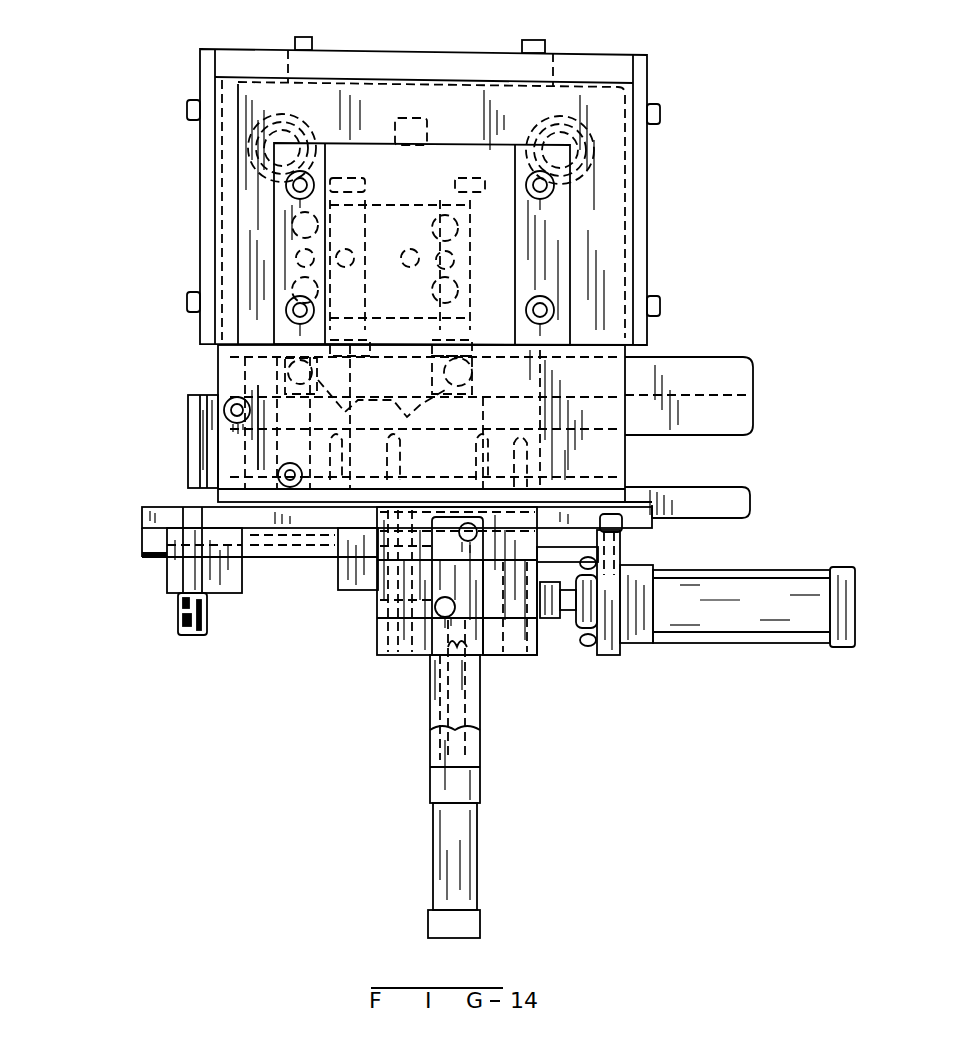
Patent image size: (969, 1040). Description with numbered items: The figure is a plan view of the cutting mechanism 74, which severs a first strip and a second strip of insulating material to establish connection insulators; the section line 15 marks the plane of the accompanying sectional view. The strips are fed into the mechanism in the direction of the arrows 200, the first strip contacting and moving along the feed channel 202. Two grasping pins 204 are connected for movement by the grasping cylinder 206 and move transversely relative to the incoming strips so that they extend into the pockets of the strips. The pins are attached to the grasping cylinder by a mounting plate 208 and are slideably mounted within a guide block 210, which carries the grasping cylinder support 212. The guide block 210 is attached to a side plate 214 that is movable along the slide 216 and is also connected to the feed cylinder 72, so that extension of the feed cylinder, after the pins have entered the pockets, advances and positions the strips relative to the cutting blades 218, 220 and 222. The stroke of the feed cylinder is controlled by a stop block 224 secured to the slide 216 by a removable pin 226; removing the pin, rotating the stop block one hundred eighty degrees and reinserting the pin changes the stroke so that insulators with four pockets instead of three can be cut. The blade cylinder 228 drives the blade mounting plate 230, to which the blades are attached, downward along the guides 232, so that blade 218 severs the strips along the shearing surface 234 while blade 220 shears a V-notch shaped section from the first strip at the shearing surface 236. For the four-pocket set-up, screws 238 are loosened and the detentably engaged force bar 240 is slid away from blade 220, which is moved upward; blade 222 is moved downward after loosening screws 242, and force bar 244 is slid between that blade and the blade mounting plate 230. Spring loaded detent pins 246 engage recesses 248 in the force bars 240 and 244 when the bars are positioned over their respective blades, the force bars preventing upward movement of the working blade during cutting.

The cutting mechanism 74 is at (665, 84).
The feed cylinder 72 is at (746, 618).
The section line 15- 15 is at (163, 430).
The arrows 200 is at (720, 462).
The feed channel 202 is at (630, 454).
The grasping pins 204 is at (512, 452).
The grasping cylinder 206 is at (478, 833).
The mounting plate 208 is at (497, 656).
The guide block 210 is at (377, 604).
The grasping cylinder support 212 is at (430, 688).
The side plate 214 is at (340, 580).
The slide 216 is at (284, 558).
The cutting blade 218 is at (214, 438).
The cutting blade 220 is at (362, 418).
The cutting blade 222 is at (472, 434).
The stop block 224 is at (166, 577).
The removable pin 226 is at (177, 621).
The blade cylinder 228 is at (342, 142).
The blade mounting plate 230 is at (632, 303).
The guides 232 is at (266, 120).
The shearing surface 234 is at (226, 406).
The shearing surface 236 is at (392, 356).
The screws 238 is at (240, 353).
The force bar 240 is at (366, 178).
The screws 242 is at (458, 340).
The force bar 244 is at (432, 145).
The spring loaded detent pins 246 is at (405, 252).
The recesses 248 is at (447, 214).